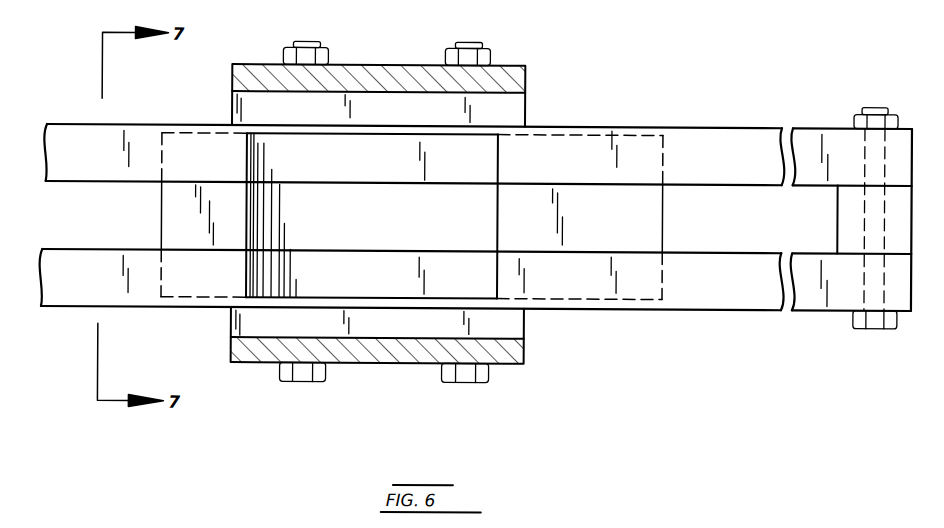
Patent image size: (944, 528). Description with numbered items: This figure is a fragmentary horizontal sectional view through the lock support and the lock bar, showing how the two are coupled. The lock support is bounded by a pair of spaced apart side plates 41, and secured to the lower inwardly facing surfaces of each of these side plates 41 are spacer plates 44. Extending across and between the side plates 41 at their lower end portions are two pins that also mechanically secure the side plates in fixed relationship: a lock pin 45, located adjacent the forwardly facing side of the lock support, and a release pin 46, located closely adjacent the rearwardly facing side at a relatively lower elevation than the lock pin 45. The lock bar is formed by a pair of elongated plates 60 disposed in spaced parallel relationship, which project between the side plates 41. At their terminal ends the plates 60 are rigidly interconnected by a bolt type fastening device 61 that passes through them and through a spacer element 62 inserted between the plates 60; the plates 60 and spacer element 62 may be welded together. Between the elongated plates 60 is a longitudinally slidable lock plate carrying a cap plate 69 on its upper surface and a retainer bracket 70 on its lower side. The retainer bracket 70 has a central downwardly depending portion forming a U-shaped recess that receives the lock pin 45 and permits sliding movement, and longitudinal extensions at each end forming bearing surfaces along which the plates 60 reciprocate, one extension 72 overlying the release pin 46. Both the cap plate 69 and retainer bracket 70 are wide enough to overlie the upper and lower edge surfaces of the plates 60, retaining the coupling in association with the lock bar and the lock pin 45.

The side plates 41 is at (510, 71).
The spacer plates 44 is at (508, 112).
The lock pin 45 is at (300, 376).
The release pin 46 is at (465, 375).
The elongated plates 60 is at (94, 131).
The bolt type fastening device 61 is at (876, 103).
The spacer element 62 is at (846, 224).
The cap plate 69 is at (272, 145).
The retainer bracket 70 is at (163, 210).
The extension 72 is at (628, 226).